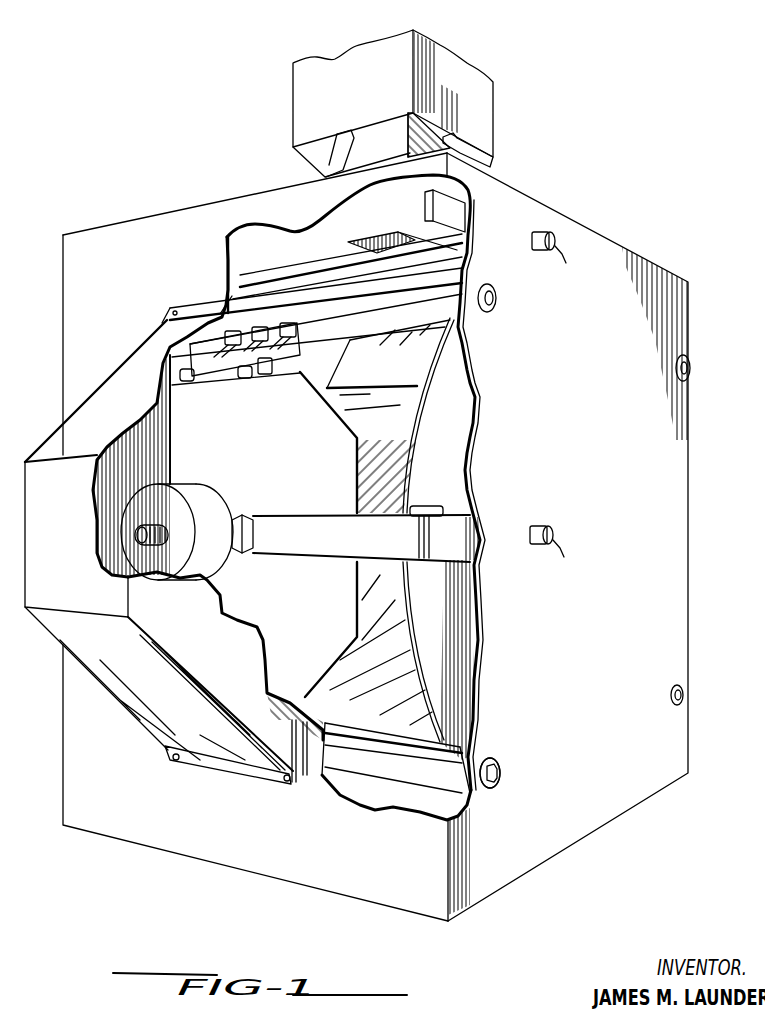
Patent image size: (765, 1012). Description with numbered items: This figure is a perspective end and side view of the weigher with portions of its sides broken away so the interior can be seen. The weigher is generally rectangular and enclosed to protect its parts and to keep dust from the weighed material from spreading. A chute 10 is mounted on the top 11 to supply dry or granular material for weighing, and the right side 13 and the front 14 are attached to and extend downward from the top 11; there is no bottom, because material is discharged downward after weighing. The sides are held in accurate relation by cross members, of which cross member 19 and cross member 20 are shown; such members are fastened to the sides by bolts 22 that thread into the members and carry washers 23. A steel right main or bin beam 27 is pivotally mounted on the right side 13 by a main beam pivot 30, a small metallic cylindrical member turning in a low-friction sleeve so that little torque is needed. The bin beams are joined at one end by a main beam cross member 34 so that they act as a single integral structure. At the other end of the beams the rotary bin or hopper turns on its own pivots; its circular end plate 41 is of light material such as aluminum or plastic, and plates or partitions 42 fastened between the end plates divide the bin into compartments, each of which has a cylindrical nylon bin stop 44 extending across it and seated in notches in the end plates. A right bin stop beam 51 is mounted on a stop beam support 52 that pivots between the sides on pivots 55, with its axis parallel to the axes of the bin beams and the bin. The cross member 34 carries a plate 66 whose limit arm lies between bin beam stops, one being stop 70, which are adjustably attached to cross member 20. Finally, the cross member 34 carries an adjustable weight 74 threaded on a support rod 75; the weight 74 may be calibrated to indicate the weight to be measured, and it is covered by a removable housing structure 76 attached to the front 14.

The chute 10 is at (297, 110).
The top 11 is at (236, 245).
The right side 13 is at (606, 812).
The front 14 is at (222, 857).
The cross member 19 is at (415, 776).
The cross member 20 is at (447, 330).
The bolt 22 is at (503, 772).
The washer 23 is at (493, 756).
The right main beam 27 is at (460, 546).
The main beam pivot 30 is at (558, 566).
The main beam cross member 34 is at (290, 546).
The circular end plate 41 is at (452, 648).
The plate 42 is at (410, 363).
The bin stop 44 is at (426, 505).
The right bin stop beam 51 is at (424, 207).
The stop beam support 52 is at (322, 272).
The pivot 55 is at (564, 258).
The plate 66 is at (232, 598).
The bin beam stop 70 is at (280, 337).
The adjustable weight 74 is at (205, 488).
The support rod 75 is at (152, 526).
The housing structure 76 is at (130, 698).